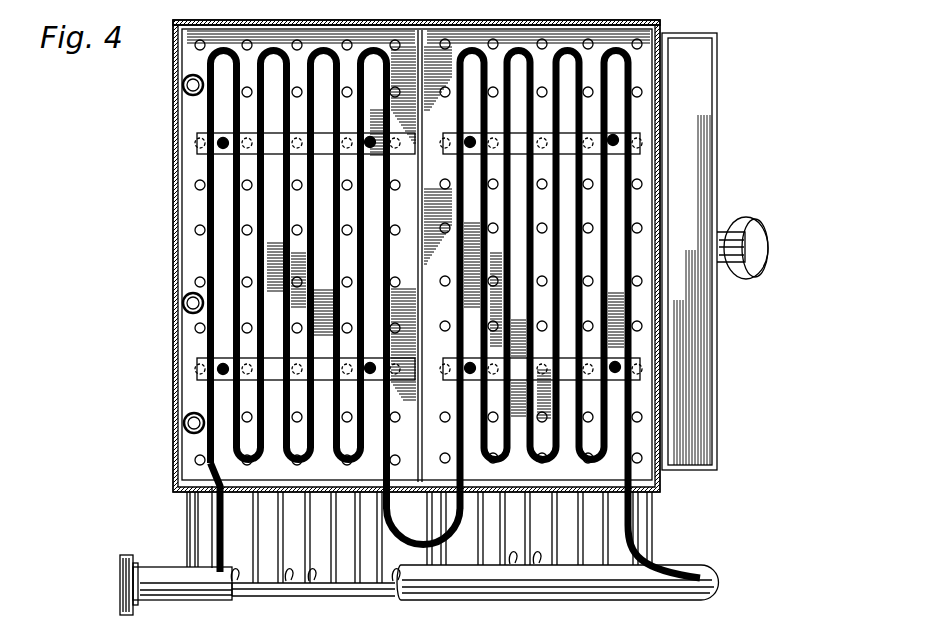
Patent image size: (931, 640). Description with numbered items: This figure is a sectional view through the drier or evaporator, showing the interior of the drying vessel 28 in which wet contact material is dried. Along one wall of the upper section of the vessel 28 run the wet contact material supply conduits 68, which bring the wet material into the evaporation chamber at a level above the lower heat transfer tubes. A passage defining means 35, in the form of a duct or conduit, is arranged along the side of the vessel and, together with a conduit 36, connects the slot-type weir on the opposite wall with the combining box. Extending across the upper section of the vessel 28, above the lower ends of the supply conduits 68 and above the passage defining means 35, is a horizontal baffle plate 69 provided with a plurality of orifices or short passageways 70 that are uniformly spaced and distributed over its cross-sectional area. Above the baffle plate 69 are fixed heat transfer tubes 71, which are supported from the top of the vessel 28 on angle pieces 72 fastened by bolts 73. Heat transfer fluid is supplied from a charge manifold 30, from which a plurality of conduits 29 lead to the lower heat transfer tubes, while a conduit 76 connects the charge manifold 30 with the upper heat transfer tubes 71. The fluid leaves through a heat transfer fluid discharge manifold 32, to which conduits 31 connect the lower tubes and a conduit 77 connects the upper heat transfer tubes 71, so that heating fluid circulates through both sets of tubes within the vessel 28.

The drying vessel 28 is at (176, 143).
The conduits 29 is at (538, 563).
The charge manifold 30 is at (173, 555).
The conduits 31 is at (312, 592).
The heat transfer fluid discharge manifold 32 is at (367, 589).
The passage defining means 35 is at (717, 96).
The conduit 36 is at (723, 229).
The wet contact material supply conduits 68 is at (184, 304).
The horizontal baffle plate 69 is at (638, 62).
The orifices 70 is at (195, 46).
The heat transfer tubes 71 is at (648, 27).
The angle pieces 72 is at (247, 160).
The bolts 73 is at (218, 152).
The conduit 76 is at (222, 512).
The conduit 77 is at (668, 562).